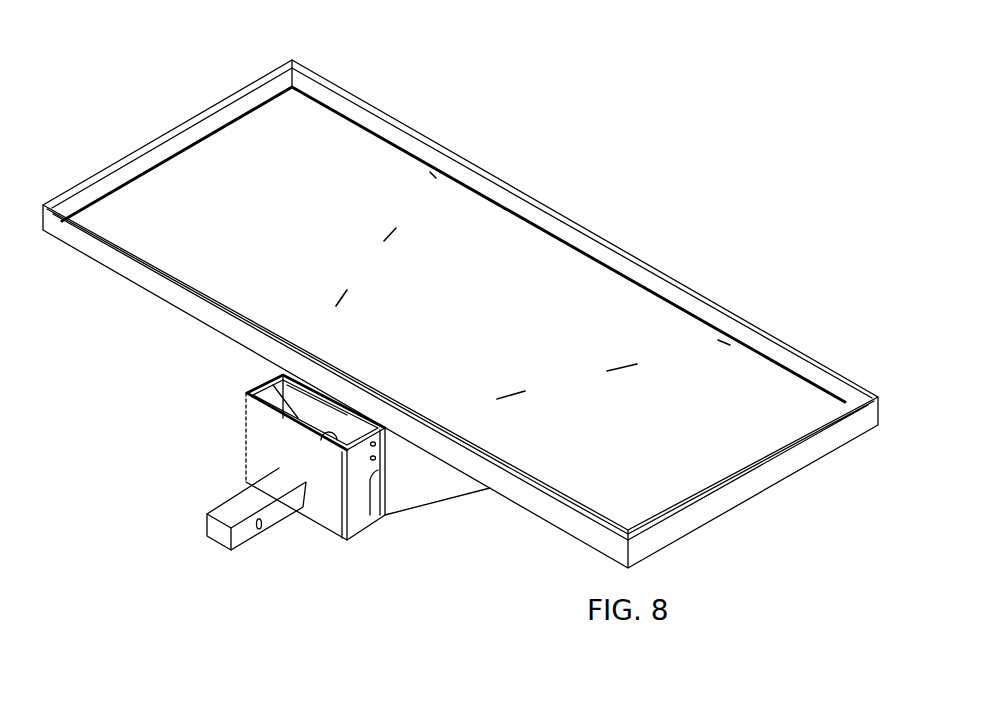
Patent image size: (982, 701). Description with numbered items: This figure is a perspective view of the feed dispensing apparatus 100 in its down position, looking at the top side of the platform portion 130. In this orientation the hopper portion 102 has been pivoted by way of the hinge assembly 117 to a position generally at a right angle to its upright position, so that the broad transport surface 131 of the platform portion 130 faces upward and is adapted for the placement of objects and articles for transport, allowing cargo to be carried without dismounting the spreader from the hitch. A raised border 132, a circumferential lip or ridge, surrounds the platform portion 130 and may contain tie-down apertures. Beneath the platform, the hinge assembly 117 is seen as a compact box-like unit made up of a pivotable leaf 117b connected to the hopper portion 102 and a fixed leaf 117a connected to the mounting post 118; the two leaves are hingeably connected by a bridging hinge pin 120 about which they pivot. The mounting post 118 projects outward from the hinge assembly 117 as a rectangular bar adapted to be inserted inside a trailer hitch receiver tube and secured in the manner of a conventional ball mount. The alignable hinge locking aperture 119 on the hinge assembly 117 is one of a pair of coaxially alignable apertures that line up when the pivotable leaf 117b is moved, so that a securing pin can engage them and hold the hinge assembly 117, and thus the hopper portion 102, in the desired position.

The feed dispensing apparatus 100 is at (138, 95).
The hopper portion 102 is at (447, 487).
The hinge assembly 117 is at (355, 562).
The fixed leaf 117a is at (252, 467).
The pivotable leaf 117b is at (243, 387).
The mounting post 118 is at (239, 529).
The alignable hinge locking aperture 119 is at (386, 480).
The hinge pin 120 is at (258, 380).
The platform portion 130 is at (546, 182).
The transport surface 131 is at (627, 308).
The raised border 132 is at (257, 80).